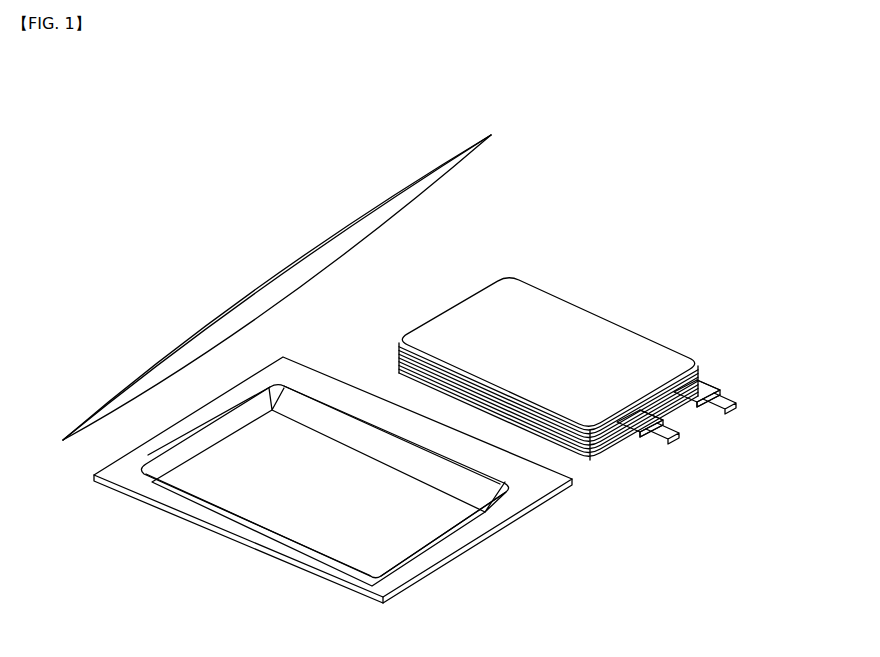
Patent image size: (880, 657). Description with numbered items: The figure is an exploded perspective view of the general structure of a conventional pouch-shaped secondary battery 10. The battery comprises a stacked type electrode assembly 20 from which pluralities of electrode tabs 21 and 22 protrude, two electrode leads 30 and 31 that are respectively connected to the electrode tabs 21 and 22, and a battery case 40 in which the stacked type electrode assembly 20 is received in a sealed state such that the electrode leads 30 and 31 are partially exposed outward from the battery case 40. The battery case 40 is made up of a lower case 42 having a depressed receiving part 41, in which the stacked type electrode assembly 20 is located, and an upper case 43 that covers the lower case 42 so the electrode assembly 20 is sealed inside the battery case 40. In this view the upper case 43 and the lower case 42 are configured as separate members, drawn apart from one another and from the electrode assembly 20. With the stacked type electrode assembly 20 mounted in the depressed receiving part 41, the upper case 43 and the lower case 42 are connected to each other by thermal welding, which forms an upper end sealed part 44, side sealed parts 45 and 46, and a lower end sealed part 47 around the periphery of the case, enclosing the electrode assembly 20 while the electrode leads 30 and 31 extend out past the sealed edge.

The pouch-shaped secondary battery 10 is at (41, 123).
The stacked type electrode assembly 20 is at (613, 302).
The electrode tab 21 is at (667, 378).
The electrode tab 22 is at (613, 418).
The electrode lead 30 is at (737, 407).
The electrode lead 31 is at (678, 450).
The battery case 40 is at (292, 480).
The depressed receiving part 41 is at (333, 497).
The lower case 42 is at (120, 493).
The upper case 43 is at (63, 441).
The upper end sealed part 44 is at (457, 538).
The side sealed part 45 is at (383, 420).
The side sealed part 46 is at (248, 533).
The lower end sealed part 47 is at (173, 440).